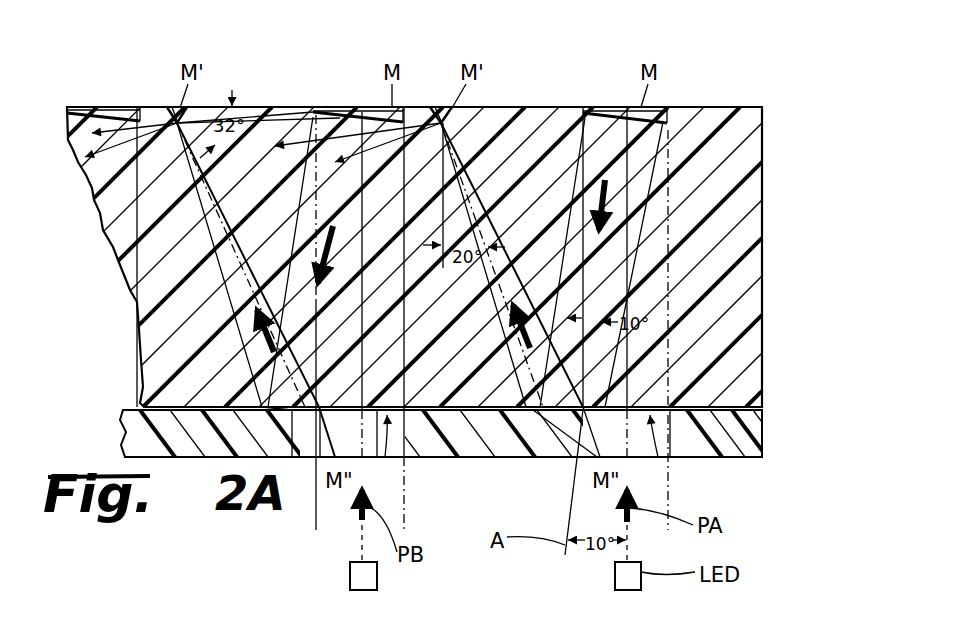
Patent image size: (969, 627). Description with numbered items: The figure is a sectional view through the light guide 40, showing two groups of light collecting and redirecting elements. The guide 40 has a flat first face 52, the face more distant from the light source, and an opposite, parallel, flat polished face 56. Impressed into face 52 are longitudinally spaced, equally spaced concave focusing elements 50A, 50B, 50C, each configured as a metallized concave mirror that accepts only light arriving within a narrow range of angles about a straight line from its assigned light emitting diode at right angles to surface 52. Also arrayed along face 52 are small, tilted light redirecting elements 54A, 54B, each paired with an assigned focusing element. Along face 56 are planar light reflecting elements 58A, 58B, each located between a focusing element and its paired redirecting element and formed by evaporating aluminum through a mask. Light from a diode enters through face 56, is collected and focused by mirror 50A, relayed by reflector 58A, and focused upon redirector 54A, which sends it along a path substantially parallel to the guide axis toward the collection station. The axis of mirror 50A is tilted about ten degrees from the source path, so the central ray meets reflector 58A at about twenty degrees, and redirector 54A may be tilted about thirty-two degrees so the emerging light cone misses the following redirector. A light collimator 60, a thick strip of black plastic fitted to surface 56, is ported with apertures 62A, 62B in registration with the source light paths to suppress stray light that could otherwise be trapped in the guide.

The light guide 40 is at (762, 262).
The light collimator 60 is at (762, 437).
The first side or face 52 is at (533, 107).
The focusing element 50A is at (625, 107).
The focusing element 50B is at (347, 107).
The focusing element 50C is at (100, 107).
The light redirecting element 54A is at (441, 107).
The light redirecting element 54B is at (172, 107).
The light reflecting element 58A is at (520, 462).
The light reflecting element 58B is at (293, 462).
The face 56 is at (377, 462).
The aperture 62A is at (657, 462).
The aperture 62B is at (387, 462).